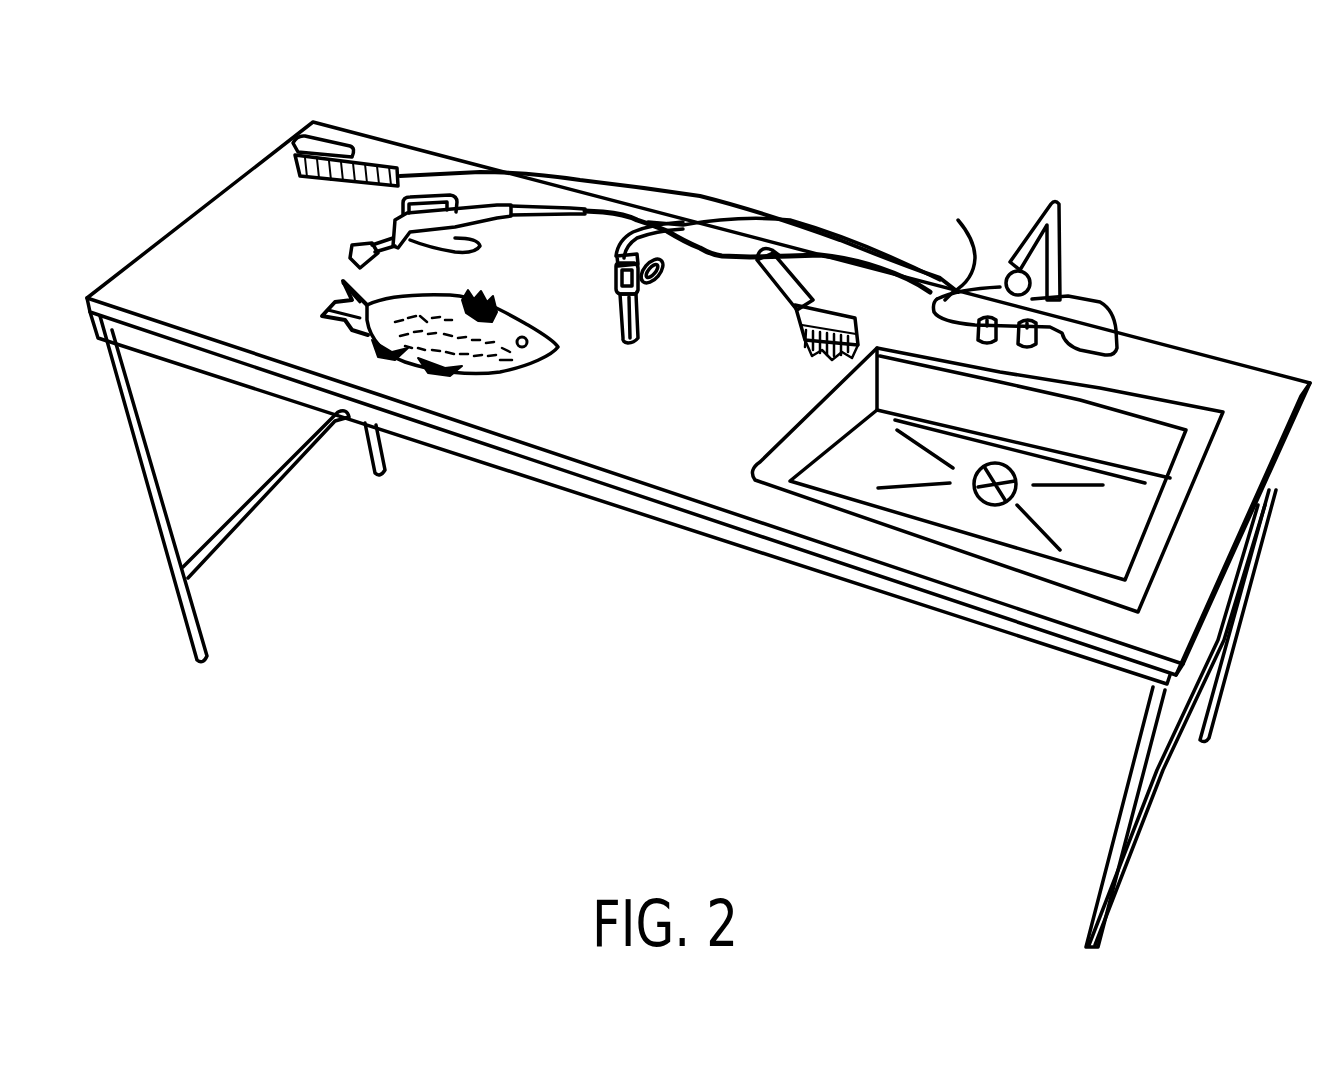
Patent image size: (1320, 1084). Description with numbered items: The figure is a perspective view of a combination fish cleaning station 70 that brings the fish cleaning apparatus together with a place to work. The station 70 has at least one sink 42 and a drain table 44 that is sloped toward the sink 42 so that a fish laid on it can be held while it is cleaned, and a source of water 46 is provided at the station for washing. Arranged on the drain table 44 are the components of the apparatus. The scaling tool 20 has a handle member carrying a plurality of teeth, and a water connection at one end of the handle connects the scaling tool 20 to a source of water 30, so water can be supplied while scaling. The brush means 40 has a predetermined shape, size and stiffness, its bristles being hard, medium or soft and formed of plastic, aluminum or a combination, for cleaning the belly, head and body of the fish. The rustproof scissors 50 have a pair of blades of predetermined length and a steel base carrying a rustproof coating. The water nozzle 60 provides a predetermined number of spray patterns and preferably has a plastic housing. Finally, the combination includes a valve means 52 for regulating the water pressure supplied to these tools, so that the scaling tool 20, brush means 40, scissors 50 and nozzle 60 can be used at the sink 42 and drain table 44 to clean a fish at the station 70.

The scaling tool 20 is at (382, 114).
The source of water 30 is at (1083, 214).
The brush means 40 is at (778, 328).
The sink 42 is at (1123, 437).
The drain table 44 is at (668, 468).
The source of water 46 is at (1062, 265).
The rustproof scissors 50 is at (660, 311).
The valve means 52 is at (970, 232).
The water nozzle 60 is at (375, 224).
The fish cleaning station 70 is at (446, 530).